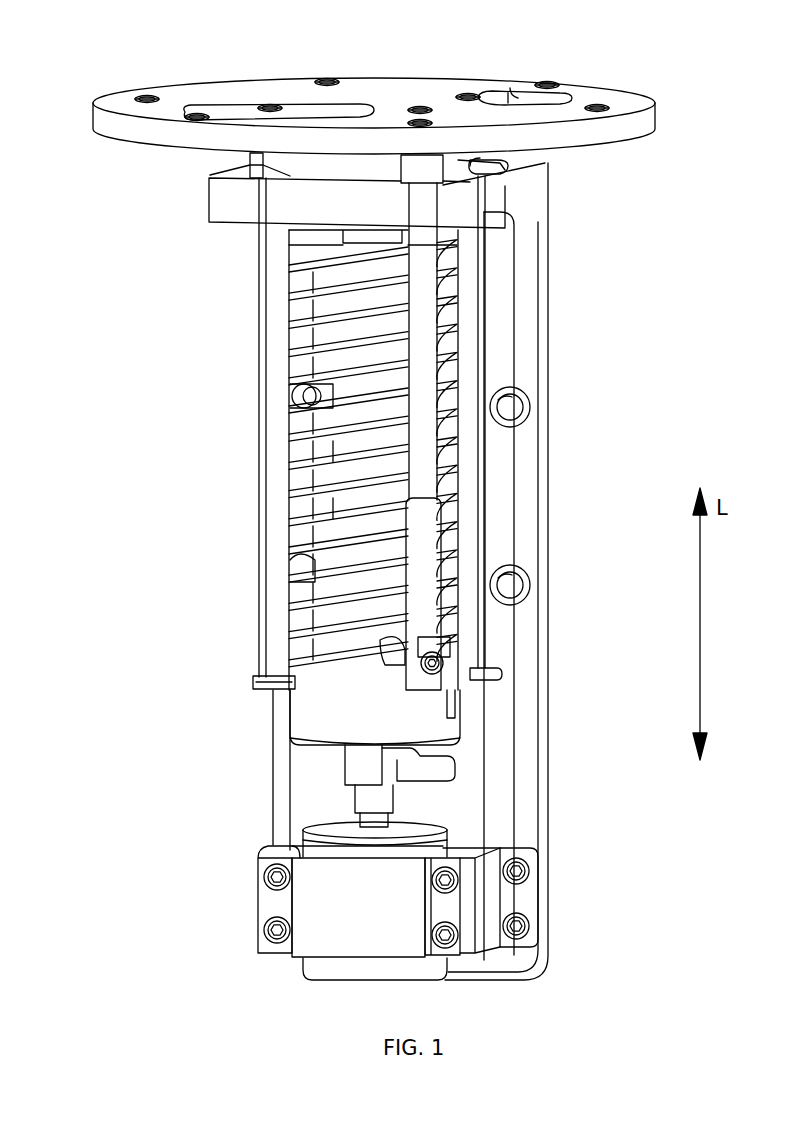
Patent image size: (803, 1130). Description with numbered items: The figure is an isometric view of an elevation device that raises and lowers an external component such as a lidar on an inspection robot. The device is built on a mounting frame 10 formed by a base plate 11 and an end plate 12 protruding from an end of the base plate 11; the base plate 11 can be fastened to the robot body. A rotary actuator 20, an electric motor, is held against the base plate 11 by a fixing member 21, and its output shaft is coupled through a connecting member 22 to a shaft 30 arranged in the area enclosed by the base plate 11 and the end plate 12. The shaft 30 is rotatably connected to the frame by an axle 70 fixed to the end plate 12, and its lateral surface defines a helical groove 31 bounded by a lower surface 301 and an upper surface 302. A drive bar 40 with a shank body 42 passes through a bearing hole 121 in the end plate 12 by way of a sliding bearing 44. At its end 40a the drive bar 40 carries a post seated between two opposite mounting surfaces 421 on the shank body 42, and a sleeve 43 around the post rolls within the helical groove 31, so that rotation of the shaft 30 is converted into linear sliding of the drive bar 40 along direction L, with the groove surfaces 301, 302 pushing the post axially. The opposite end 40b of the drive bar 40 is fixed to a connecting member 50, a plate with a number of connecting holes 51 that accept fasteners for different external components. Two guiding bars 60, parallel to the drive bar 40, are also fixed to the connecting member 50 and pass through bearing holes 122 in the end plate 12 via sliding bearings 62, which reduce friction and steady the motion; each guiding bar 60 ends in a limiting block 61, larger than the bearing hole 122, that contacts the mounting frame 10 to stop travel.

The mounting frame 10 is at (556, 497).
The base plate 11 is at (508, 540).
The end plate 12 is at (455, 203).
The bearing hole 121 is at (480, 168).
The bearing hole 122 is at (253, 172).
The rotary actuator 20 is at (360, 846).
The fixing member 21 is at (355, 905).
The connecting member 22 is at (358, 764).
The shaft 30 is at (358, 415).
The helical groove 31 is at (352, 500).
The lower surface 301 is at (395, 620).
The upper surface 302 is at (370, 613).
The drive bar 40 is at (425, 342).
The end of drive bar 40a is at (458, 695).
The end of drive bar 40b is at (418, 120).
The shank body 42 is at (430, 371).
The mounting surfaces 421 is at (430, 645).
The sleeve 43 is at (300, 705).
The sliding bearing 44 is at (413, 163).
The connecting member 50 is at (104, 100).
The connecting holes 51 is at (327, 82).
The guiding bar 60 is at (277, 327).
The limiting block 61 is at (290, 681).
The sliding bearing 62 is at (250, 163).
The axle 70 is at (282, 238).